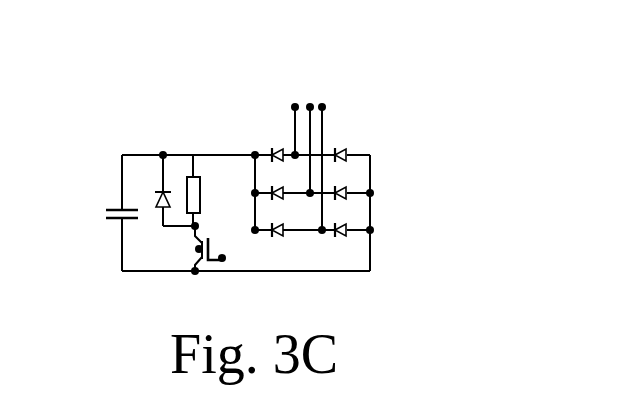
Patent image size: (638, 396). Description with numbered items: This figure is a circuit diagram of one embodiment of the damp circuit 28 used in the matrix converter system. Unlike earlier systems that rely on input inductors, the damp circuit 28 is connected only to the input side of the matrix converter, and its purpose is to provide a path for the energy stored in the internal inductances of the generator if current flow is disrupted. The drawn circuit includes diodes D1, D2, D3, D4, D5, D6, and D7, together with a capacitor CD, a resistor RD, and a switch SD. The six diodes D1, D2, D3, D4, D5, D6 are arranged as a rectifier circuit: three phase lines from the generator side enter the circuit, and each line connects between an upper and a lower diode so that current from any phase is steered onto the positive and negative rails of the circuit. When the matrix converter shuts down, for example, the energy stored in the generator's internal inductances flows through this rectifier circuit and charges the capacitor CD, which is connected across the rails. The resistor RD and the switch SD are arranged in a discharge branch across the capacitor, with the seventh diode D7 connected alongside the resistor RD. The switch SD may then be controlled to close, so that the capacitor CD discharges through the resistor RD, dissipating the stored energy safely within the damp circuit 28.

The damp circuit 28 is at (283, 173).
The diode D1 is at (341, 150).
The diode D2 is at (282, 149).
The diode D3 is at (341, 188).
The diode D4 is at (276, 190).
The diode D5 is at (341, 226).
The diode D6 is at (273, 237).
The diode D7 is at (160, 188).
The resistor RD is at (201, 188).
The capacitor CD is at (103, 212).
The switch SD is at (226, 248).